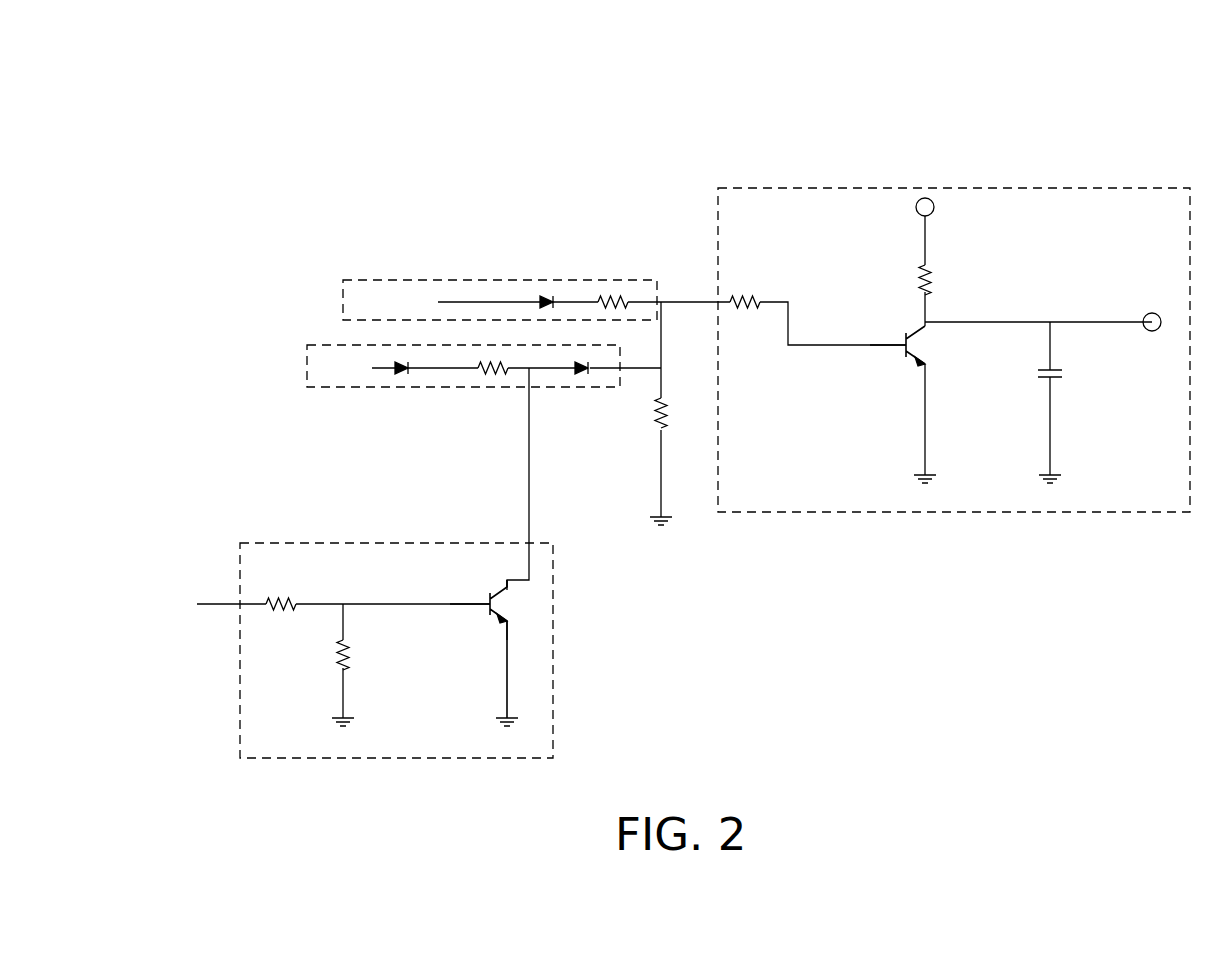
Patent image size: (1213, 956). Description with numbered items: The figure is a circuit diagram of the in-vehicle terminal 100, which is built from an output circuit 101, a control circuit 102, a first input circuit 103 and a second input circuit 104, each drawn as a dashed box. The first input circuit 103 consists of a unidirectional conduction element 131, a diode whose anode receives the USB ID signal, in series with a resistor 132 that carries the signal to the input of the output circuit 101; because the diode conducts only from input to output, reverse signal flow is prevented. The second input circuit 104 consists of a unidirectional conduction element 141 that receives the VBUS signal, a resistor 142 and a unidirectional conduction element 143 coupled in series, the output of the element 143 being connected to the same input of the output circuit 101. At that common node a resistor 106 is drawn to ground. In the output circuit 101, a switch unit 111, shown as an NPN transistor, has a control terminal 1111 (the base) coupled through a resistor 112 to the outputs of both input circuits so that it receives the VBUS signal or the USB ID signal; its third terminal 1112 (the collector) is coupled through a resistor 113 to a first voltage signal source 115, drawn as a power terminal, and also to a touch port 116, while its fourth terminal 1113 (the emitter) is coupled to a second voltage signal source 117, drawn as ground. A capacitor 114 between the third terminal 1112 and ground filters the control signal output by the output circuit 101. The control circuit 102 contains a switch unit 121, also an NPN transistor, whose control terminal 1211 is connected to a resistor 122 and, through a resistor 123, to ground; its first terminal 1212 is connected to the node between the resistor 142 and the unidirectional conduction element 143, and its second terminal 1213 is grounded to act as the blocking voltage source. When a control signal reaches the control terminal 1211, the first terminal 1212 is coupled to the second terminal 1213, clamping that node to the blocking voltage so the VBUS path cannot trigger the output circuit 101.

The in-vehicle terminal 100 is at (704, 74).
The output circuit 101 is at (1052, 188).
The control circuit 102 is at (553, 715).
The first input circuit 103 is at (343, 284).
The second input circuit 104 is at (308, 370).
The pull-down resistor 106 is at (656, 420).
The switch unit 111 is at (898, 353).
The control terminal 1111 is at (903, 340).
The third terminal 1112 is at (925, 342).
The fourth terminal 1113 is at (928, 368).
The resistor 112 is at (746, 302).
The resistor 113 is at (930, 283).
The capacitor 114 is at (1056, 375).
The first voltage signal source 115 is at (930, 198).
The touch port 116 is at (1152, 313).
The second voltage signal source 117 is at (934, 478).
The switch unit 121 is at (488, 615).
The control terminal 1211 is at (487, 602).
The first terminal 1212 is at (505, 590).
The second terminal 1213 is at (510, 614).
The resistor 122 is at (291, 604).
The resistor 123 is at (351, 665).
The unidirectional conduction element 131 is at (542, 301).
The resistor 132 is at (603, 301).
The unidirectional conduction element 141 is at (402, 377).
The resistor 142 is at (493, 377).
The unidirectional conduction element 143 is at (584, 377).